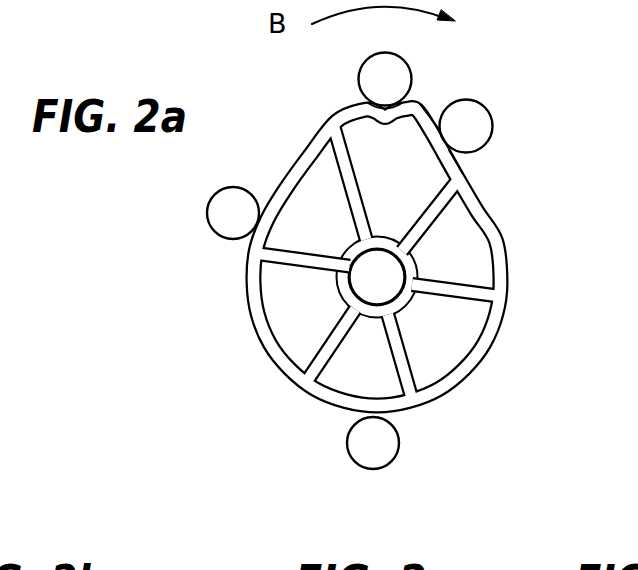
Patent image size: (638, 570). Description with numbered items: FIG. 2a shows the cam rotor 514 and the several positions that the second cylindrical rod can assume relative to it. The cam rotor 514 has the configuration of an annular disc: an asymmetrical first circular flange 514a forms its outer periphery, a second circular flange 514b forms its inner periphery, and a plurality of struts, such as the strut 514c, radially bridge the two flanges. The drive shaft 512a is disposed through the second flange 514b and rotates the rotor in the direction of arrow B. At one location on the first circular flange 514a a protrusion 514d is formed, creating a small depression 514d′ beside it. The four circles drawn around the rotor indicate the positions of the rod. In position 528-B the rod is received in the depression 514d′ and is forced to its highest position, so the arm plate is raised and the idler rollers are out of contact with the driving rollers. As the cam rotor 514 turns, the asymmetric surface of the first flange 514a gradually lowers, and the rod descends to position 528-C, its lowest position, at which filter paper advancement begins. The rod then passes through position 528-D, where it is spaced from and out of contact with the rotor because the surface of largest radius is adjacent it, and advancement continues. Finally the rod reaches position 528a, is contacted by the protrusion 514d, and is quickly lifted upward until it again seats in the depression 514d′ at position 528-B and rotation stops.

The cam rotor 514 is at (506, 253).
The first circular flange 514a is at (492, 327).
The second circular flange 514b is at (358, 316).
The spoke 514c is at (407, 357).
The protrusion 514d is at (423, 113).
The depression 514d′ is at (365, 106).
The drive shaft 512a is at (363, 283).
The rod position 528B 528-B is at (403, 70).
The rod position 528A 528a is at (492, 120).
The rod position 528C 528-C is at (213, 223).
The rod position 528D 528-D is at (395, 449).